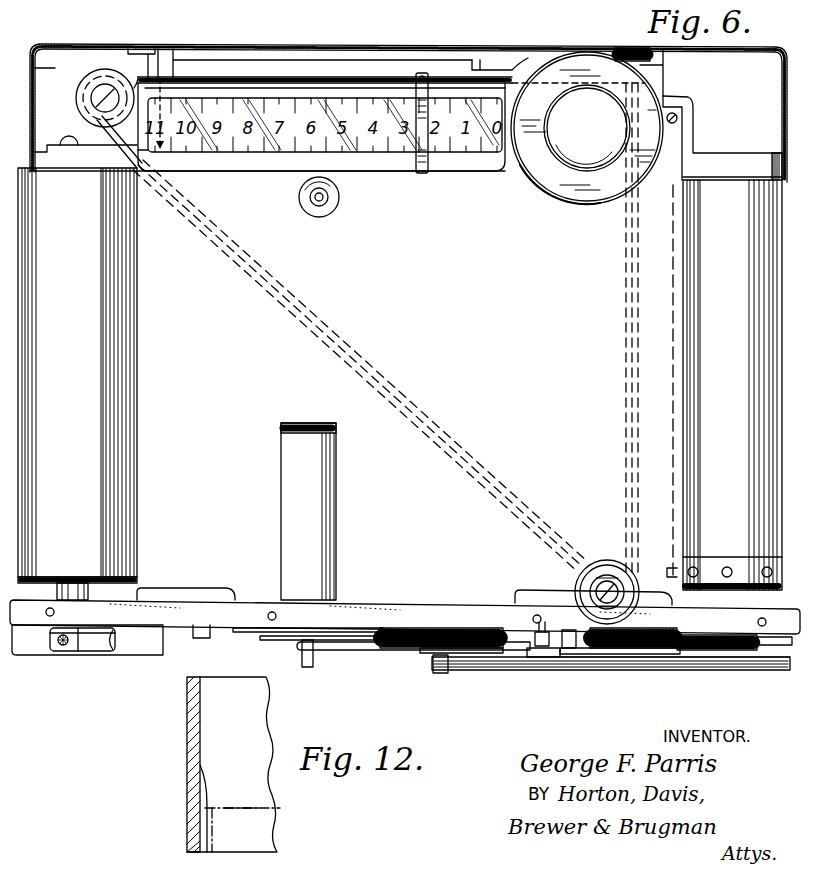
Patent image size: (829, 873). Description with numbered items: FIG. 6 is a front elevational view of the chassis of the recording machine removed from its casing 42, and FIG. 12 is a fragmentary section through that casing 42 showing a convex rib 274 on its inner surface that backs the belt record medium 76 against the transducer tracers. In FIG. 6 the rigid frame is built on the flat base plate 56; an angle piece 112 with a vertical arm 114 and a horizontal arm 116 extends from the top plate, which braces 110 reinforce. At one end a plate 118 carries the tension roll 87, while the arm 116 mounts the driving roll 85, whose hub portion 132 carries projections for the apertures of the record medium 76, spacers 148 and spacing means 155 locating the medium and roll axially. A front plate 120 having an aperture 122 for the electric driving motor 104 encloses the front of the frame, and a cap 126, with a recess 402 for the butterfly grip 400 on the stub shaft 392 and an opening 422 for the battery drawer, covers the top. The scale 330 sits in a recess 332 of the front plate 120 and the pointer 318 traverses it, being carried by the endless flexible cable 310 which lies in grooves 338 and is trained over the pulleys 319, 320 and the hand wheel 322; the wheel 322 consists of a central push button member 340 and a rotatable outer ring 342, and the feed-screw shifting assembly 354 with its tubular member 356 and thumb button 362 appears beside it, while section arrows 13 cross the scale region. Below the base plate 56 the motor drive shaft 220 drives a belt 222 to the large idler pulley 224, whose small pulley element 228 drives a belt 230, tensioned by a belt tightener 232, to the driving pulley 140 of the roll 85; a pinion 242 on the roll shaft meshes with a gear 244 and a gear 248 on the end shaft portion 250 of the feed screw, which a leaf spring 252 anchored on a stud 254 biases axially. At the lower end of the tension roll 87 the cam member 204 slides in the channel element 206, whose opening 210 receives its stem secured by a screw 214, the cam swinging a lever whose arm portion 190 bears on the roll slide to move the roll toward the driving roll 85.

In FIG. 6, the section line 13 is at (320, 72).
In FIG. 12, the casing 42 is at (187, 750).
In FIG. 6, the base plate 56 is at (388, 601).
In FIG. 12, the record medium 76 is at (247, 805).
In FIG. 6, the driving roll 85 is at (700, 385).
In FIG. 6, the tension roll 87 is at (118, 365).
In FIG. 6, the driving motor 104 is at (288, 520).
In FIG. 6, the braces 110 is at (300, 195).
In FIG. 6, the angle piece 112 is at (310, 208).
In FIG. 6, the vertical arm 114 is at (691, 124).
In FIG. 6, the horizontal arm 116 is at (731, 170).
In FIG. 6, the plate 118 is at (76, 170).
In FIG. 6, the front plate 120 is at (585, 312).
In FIG. 6, the aperture 122 is at (282, 455).
In FIG. 6, the cap 126 is at (771, 49).
In FIG. 6, the hub portion 132 is at (712, 565).
In FIG. 6, the driving pulley 140 is at (715, 673).
In FIG. 6, the spacers 148 is at (178, 586).
In FIG. 6, the spacing means 155 is at (89, 590).
In FIG. 6, the second arm portion 190 is at (118, 148).
In FIG. 6, the cam member 204 is at (102, 645).
In FIG. 6, the channel element 206 is at (27, 647).
In FIG. 6, the opening 210 is at (112, 650).
In FIG. 6, the screw 214 is at (64, 646).
In FIG. 6, the drive shaft 220 is at (302, 660).
In FIG. 6, the belt 222 is at (345, 652).
In FIG. 6, the idler pulley 224 is at (405, 650).
In FIG. 6, the pulley element 228 is at (440, 674).
In FIG. 6, the belt 230 is at (487, 671).
In FIG. 6, the belt tightener 232 is at (541, 660).
In FIG. 6, the pinion 242 is at (746, 645).
In FIG. 6, the gear 244 is at (690, 652).
In FIG. 6, the gear 248 is at (655, 650).
In FIG. 6, the end shaft portion 250 is at (642, 648).
In FIG. 6, the leaf spring 252 is at (595, 656).
In FIG. 6, the stud 254 is at (574, 651).
In FIG. 12, the rib 274 is at (200, 797).
In FIG. 6, the flexible cable 310 is at (245, 76).
In FIG. 6, the pointer 318 is at (418, 90).
In FIG. 6, the pulley 319 is at (598, 563).
In FIG. 6, the pulley 320 is at (103, 69).
In FIG. 6, the hand wheel 322 is at (573, 207).
In FIG. 6, the scale 330 is at (462, 150).
In FIG. 6, the recess 332 is at (395, 172).
In FIG. 6, the grooves 338 is at (415, 425).
In FIG. 6, the central push button member 340 is at (596, 135).
In FIG. 6, the outer ring 342 is at (562, 187).
In FIG. 6, the assembly 354 is at (780, 83).
In FIG. 6, the tubular member 356 is at (664, 66).
In FIG. 6, the button 362 is at (630, 48).
In FIG. 6, the stub shaft 392 is at (170, 62).
In FIG. 6, the butterfly grip element 400 is at (148, 48).
In FIG. 6, the recess 402 is at (127, 48).
In FIG. 6, the opening 422 is at (470, 49).